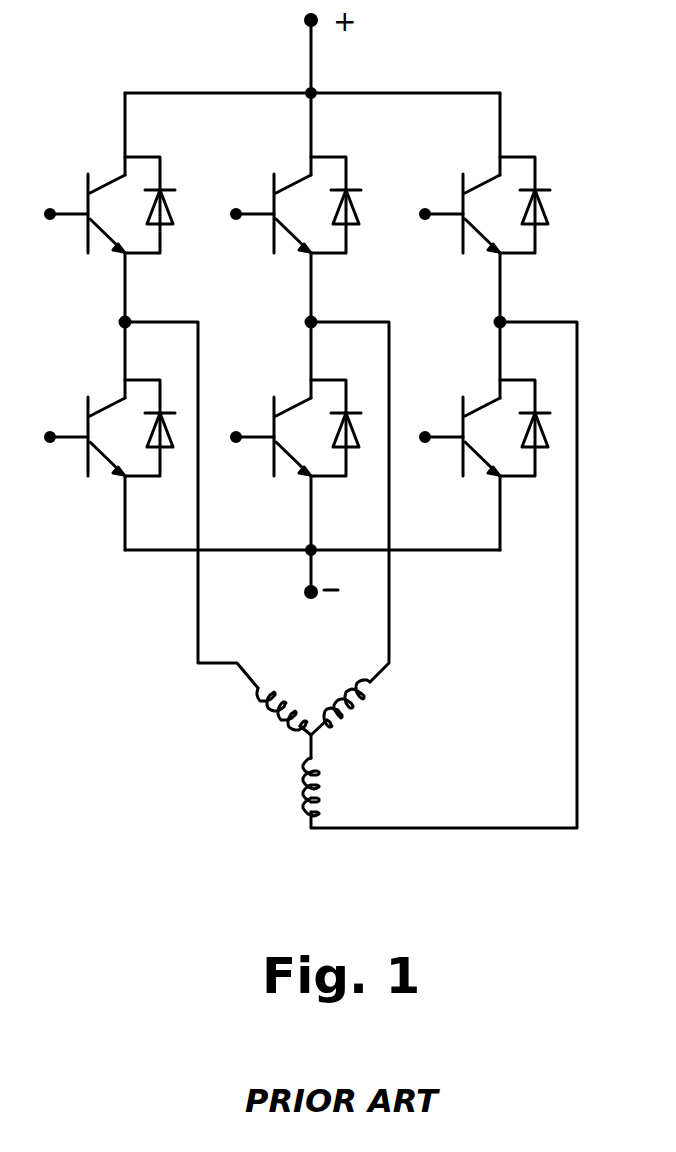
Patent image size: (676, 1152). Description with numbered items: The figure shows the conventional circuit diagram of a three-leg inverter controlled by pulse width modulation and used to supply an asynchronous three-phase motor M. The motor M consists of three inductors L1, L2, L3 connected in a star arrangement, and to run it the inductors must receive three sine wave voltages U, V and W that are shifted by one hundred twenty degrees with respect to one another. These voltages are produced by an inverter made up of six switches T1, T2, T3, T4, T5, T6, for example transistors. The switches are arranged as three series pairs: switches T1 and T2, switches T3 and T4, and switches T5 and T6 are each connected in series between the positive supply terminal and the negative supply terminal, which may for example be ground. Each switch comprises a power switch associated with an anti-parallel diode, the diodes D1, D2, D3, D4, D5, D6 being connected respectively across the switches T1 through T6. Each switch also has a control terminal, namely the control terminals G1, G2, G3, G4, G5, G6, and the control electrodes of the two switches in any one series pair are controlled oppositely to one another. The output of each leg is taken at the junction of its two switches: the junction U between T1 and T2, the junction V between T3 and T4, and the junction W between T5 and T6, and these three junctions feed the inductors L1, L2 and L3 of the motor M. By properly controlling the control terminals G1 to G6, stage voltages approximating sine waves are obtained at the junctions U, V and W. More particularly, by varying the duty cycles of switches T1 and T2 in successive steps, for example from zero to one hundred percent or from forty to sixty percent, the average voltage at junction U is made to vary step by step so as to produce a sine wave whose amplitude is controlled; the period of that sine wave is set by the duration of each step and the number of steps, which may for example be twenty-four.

The switch T1 is at (95, 198).
The switch T2 is at (95, 421).
The switch T3 is at (281, 198).
The switch T4 is at (281, 421).
The switch T5 is at (470, 198).
The switch T6 is at (470, 421).
The anti-parallel diode D1 is at (170, 215).
The anti-parallel diode D2 is at (170, 438).
The anti-parallel diode D3 is at (356, 215).
The anti-parallel diode D4 is at (356, 438).
The anti-parallel diode D5 is at (545, 215).
The anti-parallel diode D6 is at (545, 438).
The control terminal G1 is at (45, 214).
The control terminal G2 is at (45, 437).
The control terminal G3 is at (231, 214).
The control terminal G4 is at (244, 454).
The control terminal G5 is at (420, 214).
The control terminal G6 is at (431, 454).
The junction U is at (167, 498).
The junction V is at (332, 495).
The junction W is at (444, 568).
The inductor L1 is at (284, 698).
The inductor L2 is at (364, 707).
The inductor L3 is at (287, 787).
The asynchronous three-phase motor M is at (278, 741).